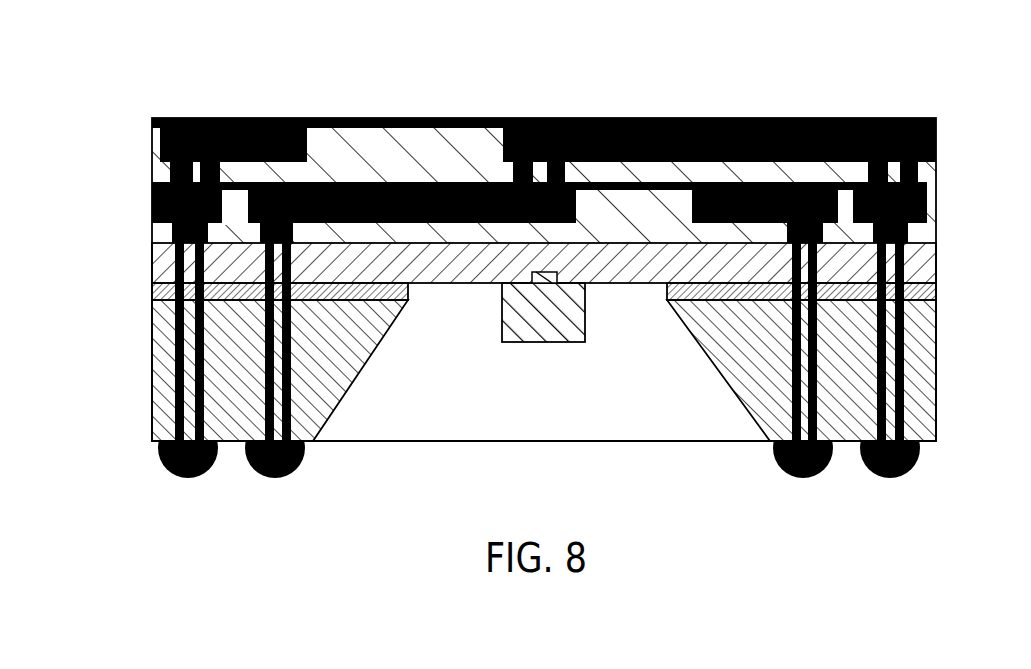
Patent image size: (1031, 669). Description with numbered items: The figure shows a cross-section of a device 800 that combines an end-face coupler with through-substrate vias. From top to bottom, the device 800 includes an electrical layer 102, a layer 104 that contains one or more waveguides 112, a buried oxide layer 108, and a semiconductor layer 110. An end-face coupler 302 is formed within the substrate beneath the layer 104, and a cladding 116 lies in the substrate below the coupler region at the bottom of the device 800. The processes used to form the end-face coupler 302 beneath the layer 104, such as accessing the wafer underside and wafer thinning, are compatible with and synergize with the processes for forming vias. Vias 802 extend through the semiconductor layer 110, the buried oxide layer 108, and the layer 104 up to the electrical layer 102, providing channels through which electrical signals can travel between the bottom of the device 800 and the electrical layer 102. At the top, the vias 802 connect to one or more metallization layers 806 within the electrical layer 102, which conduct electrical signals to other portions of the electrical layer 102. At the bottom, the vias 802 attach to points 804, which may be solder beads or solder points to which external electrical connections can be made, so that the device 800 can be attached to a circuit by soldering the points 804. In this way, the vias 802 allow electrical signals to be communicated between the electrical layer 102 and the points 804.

The device 800 is at (536, 282).
The electrical layer 102 is at (142, 120).
The metallization layers 806 is at (232, 118).
The layer 104 is at (936, 262).
The buried oxide layer 108 is at (936, 292).
The semiconductor layer 110 is at (936, 348).
The waveguides 112 is at (530, 273).
The end-face coupler 302 is at (543, 342).
The cladding 116 is at (617, 430).
The vias 802 is at (180, 404).
The points 804 is at (188, 478).